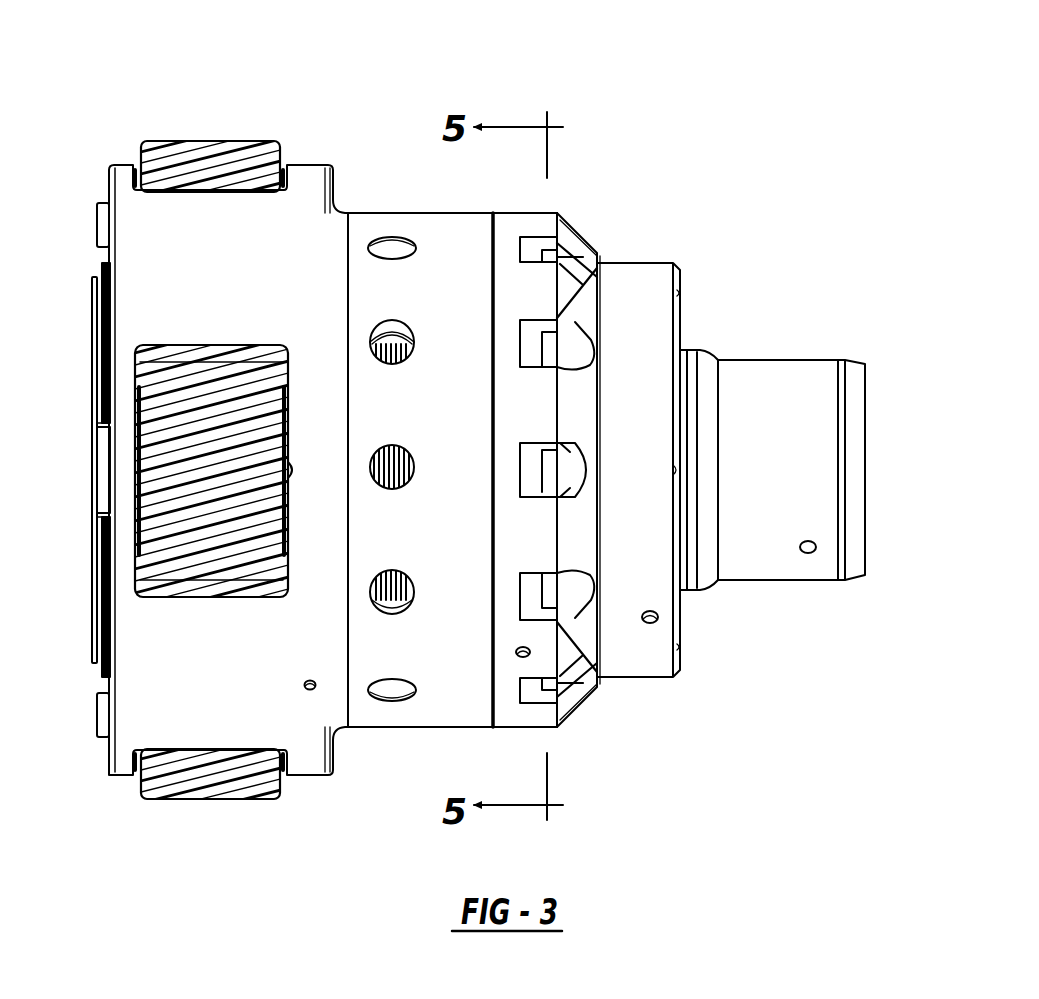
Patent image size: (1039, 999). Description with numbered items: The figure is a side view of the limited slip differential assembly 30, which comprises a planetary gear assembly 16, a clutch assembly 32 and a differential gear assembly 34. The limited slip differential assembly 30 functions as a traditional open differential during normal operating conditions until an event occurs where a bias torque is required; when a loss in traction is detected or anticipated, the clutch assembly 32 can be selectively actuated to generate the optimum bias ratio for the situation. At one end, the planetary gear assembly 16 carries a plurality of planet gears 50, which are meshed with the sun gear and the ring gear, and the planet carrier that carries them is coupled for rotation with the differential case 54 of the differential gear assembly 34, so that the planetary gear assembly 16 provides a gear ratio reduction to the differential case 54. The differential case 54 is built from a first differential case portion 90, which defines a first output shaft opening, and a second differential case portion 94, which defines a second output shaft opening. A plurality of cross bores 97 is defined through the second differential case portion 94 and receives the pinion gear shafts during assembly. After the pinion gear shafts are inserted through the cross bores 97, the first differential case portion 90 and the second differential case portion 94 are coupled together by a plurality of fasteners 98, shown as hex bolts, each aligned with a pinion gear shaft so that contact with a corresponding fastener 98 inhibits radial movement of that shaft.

The planetary gear assembly 16 is at (281, 88).
The planet gears 50 is at (208, 165).
The differential case 54 is at (428, 98).
The clutch assembly 32 is at (445, 382).
The first differential case portion 90 is at (446, 240).
The second differential case portion 94 is at (549, 213).
The fasteners 98 is at (547, 357).
The cross bores 97 is at (548, 357).
The limited slip differential assembly 30 is at (689, 125).
The differential gear assembly 34 is at (795, 278).